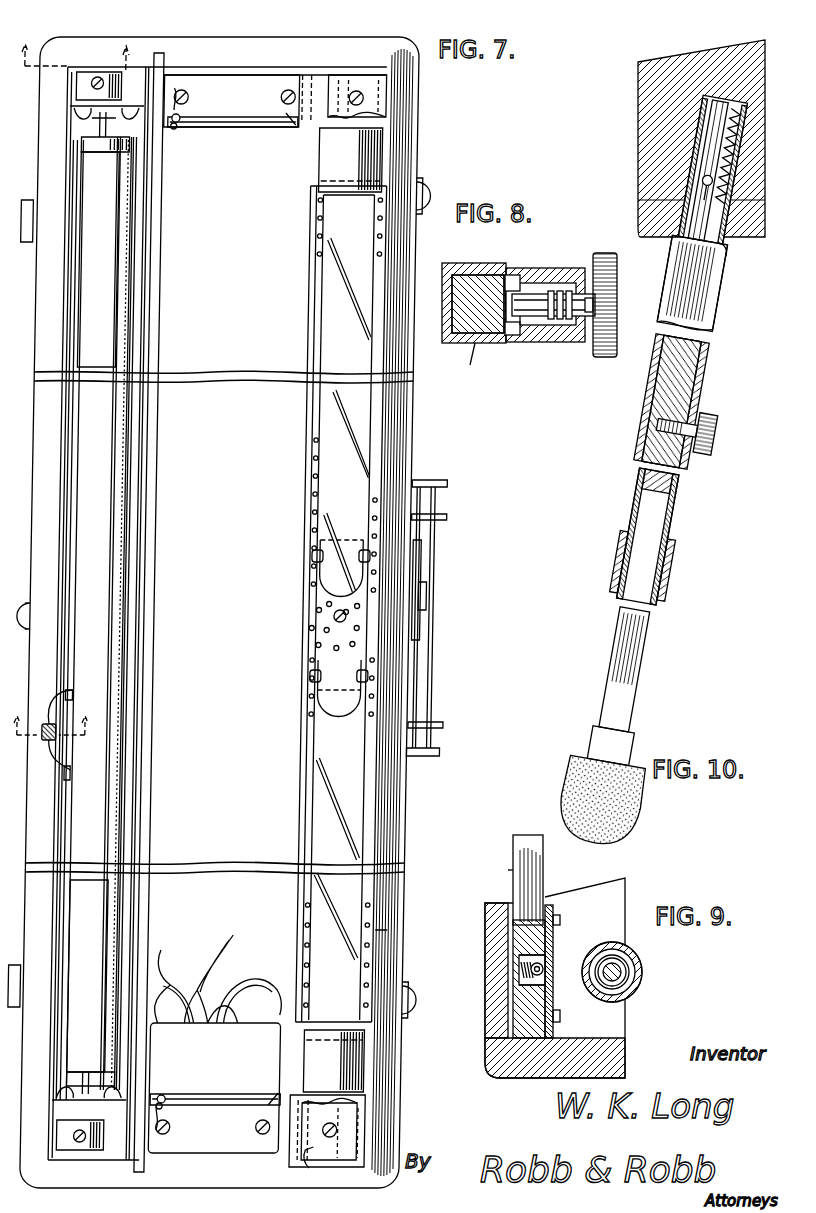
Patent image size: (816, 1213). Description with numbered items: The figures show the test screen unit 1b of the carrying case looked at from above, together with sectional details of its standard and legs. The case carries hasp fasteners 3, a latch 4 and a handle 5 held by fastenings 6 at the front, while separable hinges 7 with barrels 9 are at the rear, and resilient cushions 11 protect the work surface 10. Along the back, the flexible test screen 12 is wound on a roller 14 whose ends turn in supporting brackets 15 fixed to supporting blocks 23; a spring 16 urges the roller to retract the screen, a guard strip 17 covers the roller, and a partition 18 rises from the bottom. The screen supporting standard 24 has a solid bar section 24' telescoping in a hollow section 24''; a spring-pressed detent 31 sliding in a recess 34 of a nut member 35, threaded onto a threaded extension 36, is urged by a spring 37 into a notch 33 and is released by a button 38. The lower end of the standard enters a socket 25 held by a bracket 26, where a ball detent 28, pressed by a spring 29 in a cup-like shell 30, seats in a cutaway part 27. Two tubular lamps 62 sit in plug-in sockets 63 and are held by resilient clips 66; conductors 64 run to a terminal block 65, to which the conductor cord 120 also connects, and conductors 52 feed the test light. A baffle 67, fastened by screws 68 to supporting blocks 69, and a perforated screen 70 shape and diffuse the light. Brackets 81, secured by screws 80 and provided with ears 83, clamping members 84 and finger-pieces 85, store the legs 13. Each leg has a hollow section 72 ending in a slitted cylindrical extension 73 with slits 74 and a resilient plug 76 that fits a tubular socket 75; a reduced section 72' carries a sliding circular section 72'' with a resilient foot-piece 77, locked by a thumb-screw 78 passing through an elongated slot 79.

In FIG. 9, the test screen unit 1b is at (485, 1058).
In FIG. 10, the test screen unit 1b is at (638, 103).
In FIG. 7, the hasp-type fastener 3 is at (434, 196).
In FIG. 7, the latch 4 is at (437, 640).
In FIG. 7, the handle 5 is at (444, 570).
In FIG. 7, the fastening 6 is at (456, 483).
In FIG. 7, the hinge 7 is at (31, 226).
In FIG. 7, the socket or barrel 9 is at (49, 739).
In FIG. 7, the supporting work surface 10 is at (84, 45).
In FIG. 7, the resilient cushion 11 is at (44, 616).
In FIG. 7, the test screen 12 is at (139, 547).
In FIG. 10, the adjustable leg 13 is at (728, 318).
In FIG. 7, the roller 14 is at (130, 148).
In FIG. 9, the roller 14 is at (606, 948).
In FIG. 7, the supporting bracket 15 is at (80, 118).
In FIG. 7, the spring 16 is at (398, 936).
In FIG. 9, the spring 16 is at (628, 990).
In FIG. 7, the guard strip 17 is at (84, 72).
In FIG. 7, the partition 18 is at (150, 772).
In FIG. 7, the supporting block 23 is at (142, 70).
In FIG. 7, the screen supporting upright or standard 24 is at (82, 620).
In FIG. 8, the screen supporting upright or standard 24 is at (469, 325).
In FIG. 9, the screen supporting upright or standard 24 is at (551, 880).
In FIG. 8, the solid bar section 24' is at (476, 284).
In FIG. 9, the solid bar section 24' is at (491, 867).
In FIG. 8, the hollow section 24'' is at (481, 368).
In FIG. 7, the socket 25 is at (84, 770).
In FIG. 9, the socket 25 is at (497, 1030).
In FIG. 7, the bracket 26 is at (69, 732).
In FIG. 9, the cutaway part 27 is at (553, 985).
In FIG. 9, the ball detent 28 is at (522, 958).
In FIG. 9, the spring 29 is at (531, 972).
In FIG. 9, the cup-like shell 30 is at (520, 995).
In FIG. 8, the spring-pressed detent 31 is at (512, 335).
In FIG. 8, the notch 33 is at (512, 275).
In FIG. 8, the recess 34 is at (560, 342).
In FIG. 8, the nut member 35 is at (575, 266).
In FIG. 8, the threaded extension 36 is at (530, 342).
In FIG. 8, the spring 37 is at (596, 300).
In FIG. 8, the finger-piece or button 38 is at (604, 357).
In FIG. 7, the electrical conductor 52 is at (178, 950).
In FIG. 7, the electric lamp 62 is at (370, 448).
In FIG. 7, the socket 63 is at (372, 146).
In FIG. 7, the conductor 64 is at (268, 975).
In FIG. 7, the terminal block 65 is at (214, 1088).
In FIG. 7, the resilient clip 66 is at (322, 556).
In FIG. 7, the baffle 67 is at (330, 1166).
In FIG. 7, the screw 68 is at (358, 80).
In FIG. 7, the supporting block 69 is at (296, 76).
In FIG. 7, the perforated screen 70 is at (316, 477).
In FIG. 10, the leg section 72 is at (676, 280).
In FIG. 10, the reduced leg section 72' is at (653, 399).
In FIG. 10, the circular leg section 72'' is at (631, 687).
In FIG. 10, the cylindrical extension 73 is at (728, 248).
In FIG. 10, the slit 74 is at (688, 160).
In FIG. 10, the tubular socket 75 is at (678, 190).
In FIG. 10, the resilient plug 76 is at (723, 135).
In FIG. 10, the resilient foot-piece 77 is at (640, 820).
In FIG. 10, the thumb-screw 78 is at (760, 430).
In FIG. 10, the elongated slot 79 is at (720, 485).
In FIG. 7, the screw 80 is at (283, 98).
In FIG. 7, the supporting bracket 81 is at (234, 127).
In FIG. 7, the laterally offset ear 83 is at (177, 88).
In FIG. 7, the resilient clamping member 84 is at (268, 125).
In FIG. 7, the finger-piece 85 is at (186, 120).
In FIG. 7, the conductor cord 120 is at (250, 935).